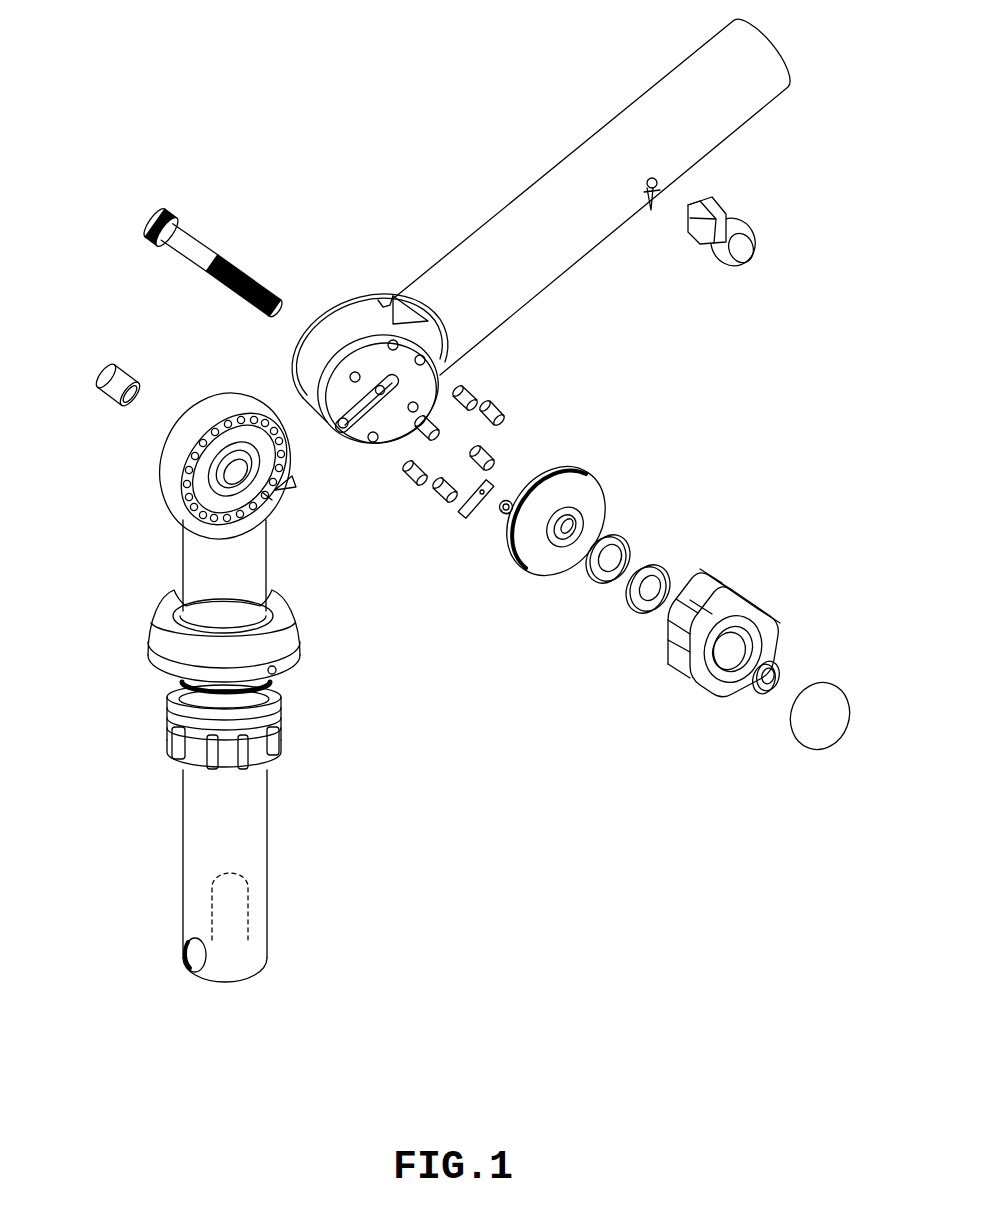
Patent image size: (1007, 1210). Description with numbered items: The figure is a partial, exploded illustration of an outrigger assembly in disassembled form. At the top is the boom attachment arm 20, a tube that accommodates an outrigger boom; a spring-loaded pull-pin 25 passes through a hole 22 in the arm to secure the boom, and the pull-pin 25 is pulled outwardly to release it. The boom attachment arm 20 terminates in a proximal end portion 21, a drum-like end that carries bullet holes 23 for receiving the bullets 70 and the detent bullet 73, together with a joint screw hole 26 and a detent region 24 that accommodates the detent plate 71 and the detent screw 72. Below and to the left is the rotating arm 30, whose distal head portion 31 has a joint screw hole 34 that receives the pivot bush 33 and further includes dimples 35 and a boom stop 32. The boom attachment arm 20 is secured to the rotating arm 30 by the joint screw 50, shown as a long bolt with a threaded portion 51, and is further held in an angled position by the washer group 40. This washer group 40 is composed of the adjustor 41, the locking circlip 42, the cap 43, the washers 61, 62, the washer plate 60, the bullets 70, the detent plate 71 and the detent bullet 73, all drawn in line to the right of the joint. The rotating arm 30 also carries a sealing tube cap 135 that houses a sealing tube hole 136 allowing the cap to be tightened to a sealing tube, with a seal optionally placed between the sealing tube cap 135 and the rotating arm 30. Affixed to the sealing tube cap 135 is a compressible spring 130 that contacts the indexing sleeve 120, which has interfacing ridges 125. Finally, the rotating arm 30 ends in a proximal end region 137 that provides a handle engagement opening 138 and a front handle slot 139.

The boom attachment arm 20 is at (652, 110).
The proximal end portion 21 is at (353, 302).
The hole 22 is at (650, 210).
The bullet holes 23 is at (393, 340).
The detent region 24 is at (355, 413).
The pull-pin 25 is at (756, 253).
The joint screw hole 26 is at (384, 392).
The rotating arm 30 is at (143, 556).
The distal head portion 31 is at (170, 468).
The boom stop 32 is at (282, 488).
The pivot bush 33 is at (110, 372).
The joint screw hole 34 is at (218, 445).
The dimples 35 is at (268, 497).
The washer group 40 is at (785, 594).
The adjustor 41 is at (765, 620).
The locking circlip 42 is at (781, 668).
The cap 43 is at (830, 712).
The joint screw 50 is at (183, 236).
The threaded portion 51 is at (262, 278).
The washer plate 60 is at (588, 497).
The washer 61 is at (634, 532).
The washer 62 is at (677, 568).
The bullets 70 is at (500, 410).
The detent plate 71 is at (468, 512).
The detent screw 72 is at (510, 501).
The detent bullet 73 is at (413, 484).
The indexing sleeve 120 is at (230, 772).
The interfacing ridges 125 is at (244, 755).
The compressible spring 130 is at (280, 715).
The sealing tube cap 135 is at (267, 642).
The sealing tube hole 136 is at (278, 675).
The proximal end region 137 is at (247, 947).
The handle engagement opening 138 is at (186, 963).
The front handle slot 139 is at (252, 901).